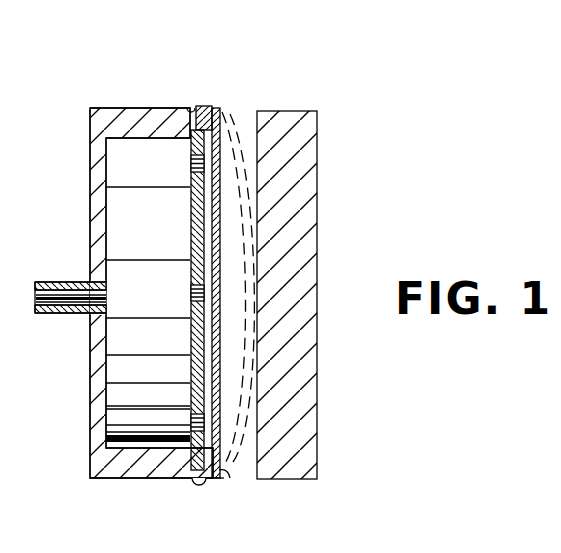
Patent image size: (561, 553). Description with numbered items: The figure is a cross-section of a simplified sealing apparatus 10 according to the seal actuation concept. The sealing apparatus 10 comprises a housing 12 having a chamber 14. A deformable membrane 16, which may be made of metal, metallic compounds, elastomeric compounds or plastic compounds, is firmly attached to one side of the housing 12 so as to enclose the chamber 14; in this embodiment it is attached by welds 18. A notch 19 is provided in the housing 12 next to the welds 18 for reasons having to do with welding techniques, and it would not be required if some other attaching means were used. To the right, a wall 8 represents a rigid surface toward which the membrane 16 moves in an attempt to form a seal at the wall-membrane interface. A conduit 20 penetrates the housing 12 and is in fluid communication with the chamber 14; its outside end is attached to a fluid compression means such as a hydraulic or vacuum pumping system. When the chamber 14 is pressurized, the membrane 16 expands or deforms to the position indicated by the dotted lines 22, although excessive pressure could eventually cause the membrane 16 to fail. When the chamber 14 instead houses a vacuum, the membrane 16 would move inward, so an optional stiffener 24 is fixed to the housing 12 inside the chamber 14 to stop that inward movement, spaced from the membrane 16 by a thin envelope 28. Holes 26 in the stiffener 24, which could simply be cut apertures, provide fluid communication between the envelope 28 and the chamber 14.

The wall 8 is at (317, 130).
The sealing apparatus 10 is at (122, 63).
The housing 12 is at (128, 296).
The chamber 14 is at (166, 230).
The membrane 16 is at (237, 112).
The welds 18 is at (214, 108).
The notch 19 is at (191, 108).
The conduit 20 is at (64, 282).
The dotted lines 22 is at (243, 432).
The stiffener 24 is at (190, 326).
The holes 26 is at (191, 163).
The envelope 28 is at (228, 480).